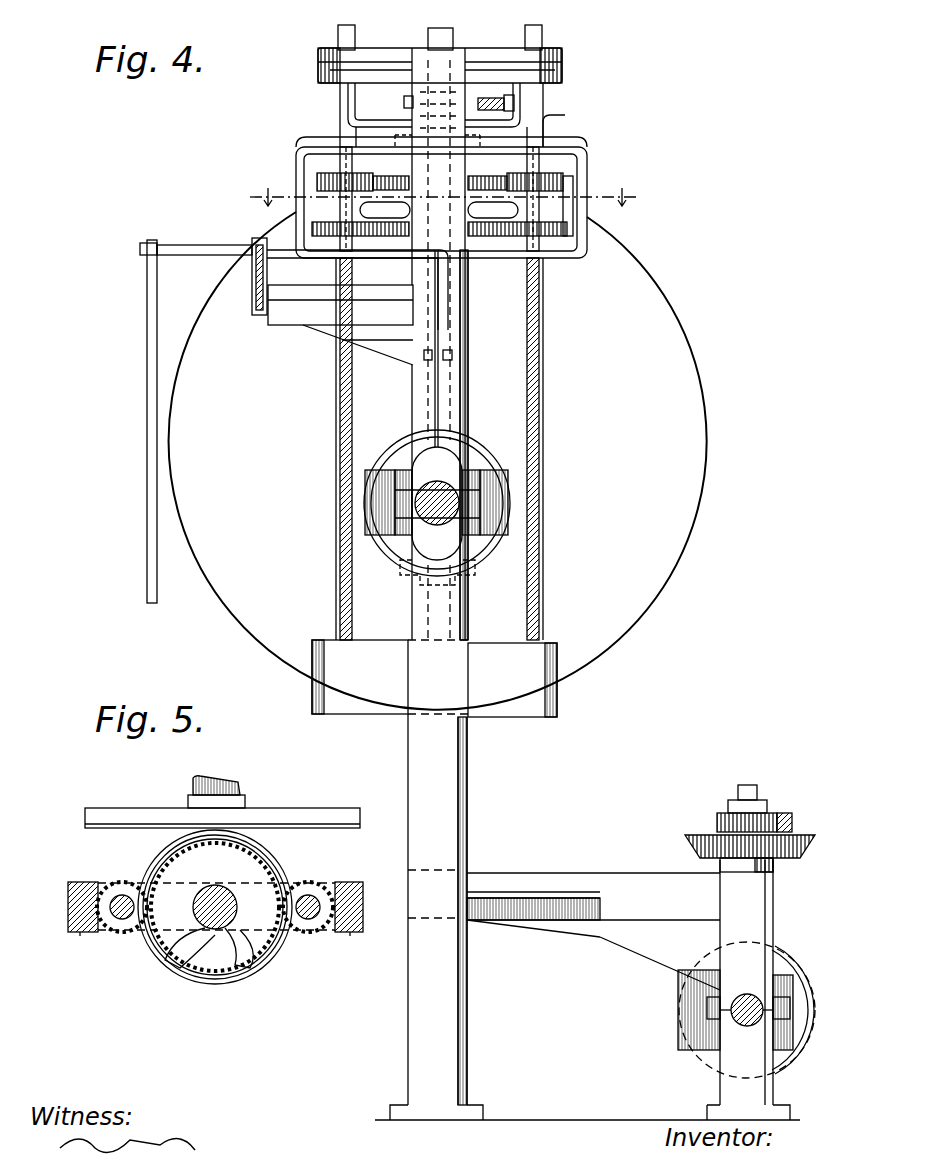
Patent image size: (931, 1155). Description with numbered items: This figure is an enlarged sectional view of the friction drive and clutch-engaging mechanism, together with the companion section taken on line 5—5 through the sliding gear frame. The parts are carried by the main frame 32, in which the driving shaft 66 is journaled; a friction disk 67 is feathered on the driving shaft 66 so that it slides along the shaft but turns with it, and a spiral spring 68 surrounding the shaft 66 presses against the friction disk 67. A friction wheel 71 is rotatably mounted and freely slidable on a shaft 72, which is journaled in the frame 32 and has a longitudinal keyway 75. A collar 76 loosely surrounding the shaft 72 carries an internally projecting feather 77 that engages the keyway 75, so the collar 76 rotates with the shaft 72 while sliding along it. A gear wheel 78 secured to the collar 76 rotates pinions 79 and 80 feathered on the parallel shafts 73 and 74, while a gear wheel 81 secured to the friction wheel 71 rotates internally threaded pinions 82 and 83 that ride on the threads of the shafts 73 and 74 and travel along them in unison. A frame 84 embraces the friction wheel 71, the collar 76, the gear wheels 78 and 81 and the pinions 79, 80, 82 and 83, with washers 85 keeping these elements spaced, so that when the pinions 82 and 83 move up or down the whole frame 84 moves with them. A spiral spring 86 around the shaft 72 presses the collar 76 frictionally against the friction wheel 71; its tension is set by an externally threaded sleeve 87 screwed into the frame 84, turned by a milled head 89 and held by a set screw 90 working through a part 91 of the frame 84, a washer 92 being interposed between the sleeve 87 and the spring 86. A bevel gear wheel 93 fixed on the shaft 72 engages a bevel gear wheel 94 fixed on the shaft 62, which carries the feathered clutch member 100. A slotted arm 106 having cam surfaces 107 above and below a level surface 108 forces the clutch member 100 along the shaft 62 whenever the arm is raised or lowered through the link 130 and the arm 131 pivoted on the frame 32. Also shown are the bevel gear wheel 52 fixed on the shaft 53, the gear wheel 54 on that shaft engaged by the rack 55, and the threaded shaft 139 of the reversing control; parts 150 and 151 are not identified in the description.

In FIG. 4, the section line 5— 5 is at (446, 197).
In FIG. 4, the frame 32 is at (378, 58).
In FIG. 4, the bevel gear wheel 52 is at (685, 848).
In FIG. 4, the shaft 53 is at (755, 785).
In FIG. 4, the gear wheel 54 is at (718, 816).
In FIG. 4, the rack 55 is at (788, 813).
In FIG. 4, the shaft 62 is at (455, 490).
In FIG. 5, the driving shaft 66 is at (212, 778).
In FIG. 4, the friction disk 67 is at (688, 350).
In FIG. 5, the friction disk 67 is at (300, 815).
In FIG. 5, the spiral spring 68 is at (240, 796).
In FIG. 4, the friction wheel 71 is at (398, 240).
In FIG. 5, the friction wheel 71 is at (280, 858).
In FIG. 4, the shaft 72 is at (468, 292).
In FIG. 5, the shaft 72 is at (190, 925).
In FIG. 4, the shaft 73 is at (338, 405).
In FIG. 5, the shaft 73 is at (115, 900).
In FIG. 4, the shaft 74 is at (545, 362).
In FIG. 5, the shaft 74 is at (315, 900).
In FIG. 5, the keyway 75 is at (268, 968).
In FIG. 4, the collar 76 is at (470, 175).
In FIG. 5, the collar 76 is at (240, 975).
In FIG. 5, the feather 77 is at (190, 965).
In FIG. 4, the gear wheel 78 is at (540, 150).
In FIG. 4, the pinion 79 is at (322, 172).
In FIG. 4, the pinion 80 is at (560, 178).
In FIG. 4, the gear wheel 81 is at (545, 283).
In FIG. 4, the pinion 82 is at (320, 232).
In FIG. 5, the pinion 82 is at (82, 932).
In FIG. 4, the pinion 83 is at (575, 230).
In FIG. 5, the pinion 83 is at (330, 925).
In FIG. 4, the frame 84 is at (590, 240).
In FIG. 5, the frame 84 is at (68, 905).
In FIG. 4, the washers 85 is at (320, 150).
In FIG. 4, the spiral spring 86 is at (412, 168).
In FIG. 4, the externally threaded sleeve 87 is at (404, 130).
In FIG. 4, the milled head 89 is at (404, 100).
In FIG. 4, the set screw 90 is at (510, 95).
In FIG. 4, the part of frame 91 is at (488, 95).
In FIG. 4, the washer 92 is at (470, 137).
In FIG. 4, the bevel gear wheel 93 is at (470, 578).
In FIG. 4, the bevel gear wheel 94 is at (465, 445).
In FIG. 4, the clutch member 100 is at (470, 462).
In FIG. 4, the slotted arm 106 is at (480, 508).
In FIG. 4, the cam surfaces 107 is at (400, 460).
In FIG. 4, the level surface 108 is at (395, 506).
In FIG. 4, the link 130 is at (194, 250).
In FIG. 4, the arm 131 is at (406, 280).
In FIG. 4, the shaft 139 is at (765, 985).
In FIG. 4, the pin 150 is at (452, 354).
In FIG. 4, the hub 151 is at (678, 1015).